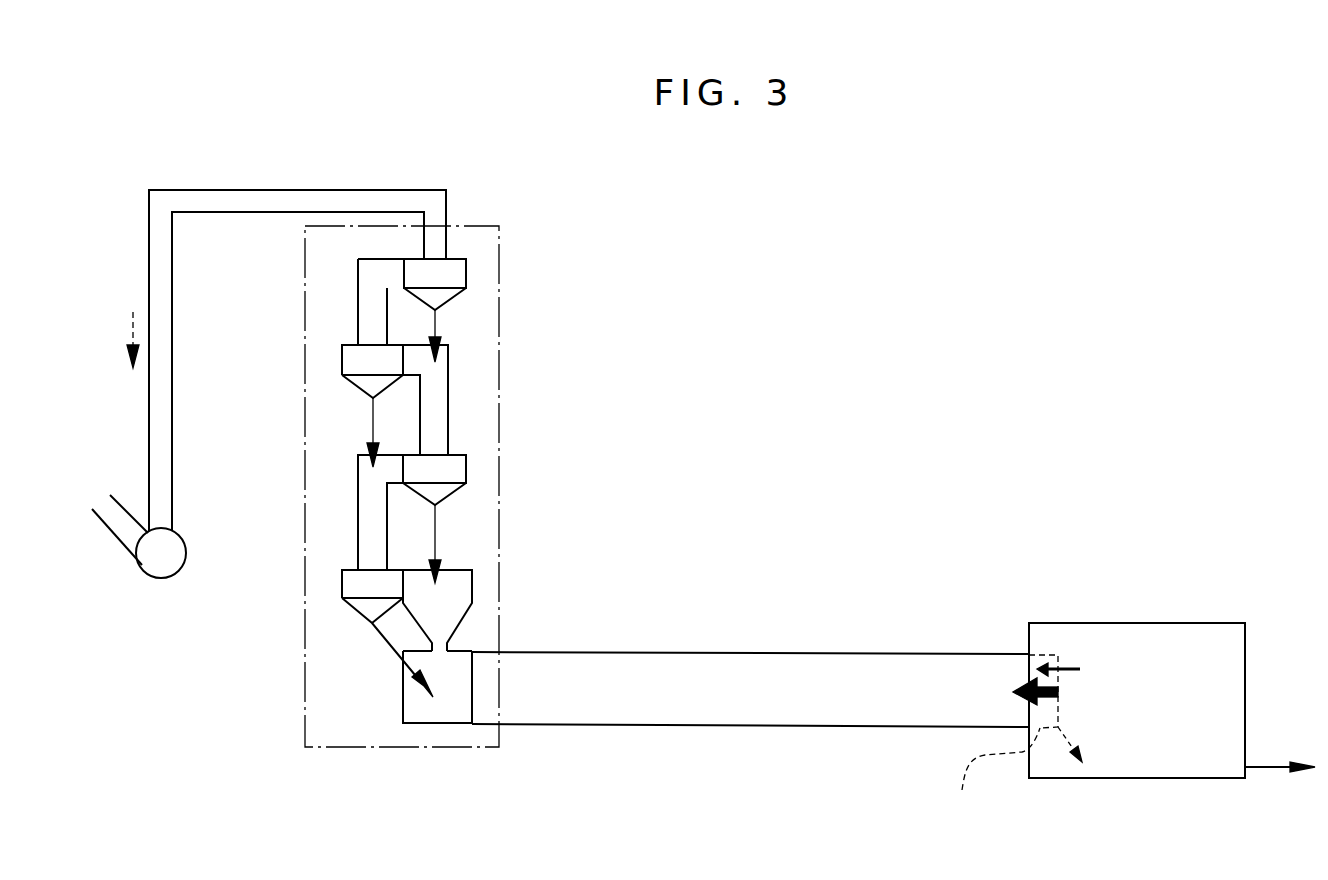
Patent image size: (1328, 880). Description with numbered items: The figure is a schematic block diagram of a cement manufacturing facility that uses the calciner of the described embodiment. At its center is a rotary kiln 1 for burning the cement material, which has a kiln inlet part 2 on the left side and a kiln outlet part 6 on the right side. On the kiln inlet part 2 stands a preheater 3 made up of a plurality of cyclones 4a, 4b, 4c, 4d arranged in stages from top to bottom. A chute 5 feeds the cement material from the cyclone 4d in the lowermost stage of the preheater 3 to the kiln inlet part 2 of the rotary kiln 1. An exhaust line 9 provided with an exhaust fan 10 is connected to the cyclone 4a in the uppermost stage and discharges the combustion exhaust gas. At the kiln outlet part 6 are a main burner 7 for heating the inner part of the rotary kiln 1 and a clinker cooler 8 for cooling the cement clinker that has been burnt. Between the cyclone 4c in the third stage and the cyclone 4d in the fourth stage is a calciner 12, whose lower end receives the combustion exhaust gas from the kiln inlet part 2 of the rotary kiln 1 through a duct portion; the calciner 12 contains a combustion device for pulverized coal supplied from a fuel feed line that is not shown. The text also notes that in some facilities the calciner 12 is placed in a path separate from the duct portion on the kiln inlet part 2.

The rotary kiln 1 is at (728, 665).
The kiln inlet part 2 is at (437, 703).
The preheater 3 is at (497, 410).
The cyclone 4a is at (457, 270).
The cyclone 4b is at (350, 358).
The cyclone 4c is at (462, 467).
The cyclone 4d is at (347, 583).
The chute 5 is at (377, 632).
The kiln outlet part 6 is at (994, 774).
The main burner 7 is at (1030, 655).
The clinker cooler 8 is at (1128, 637).
The exhaust line 9 is at (225, 200).
The exhaust fan 10 is at (158, 565).
The calciner 12 is at (462, 593).